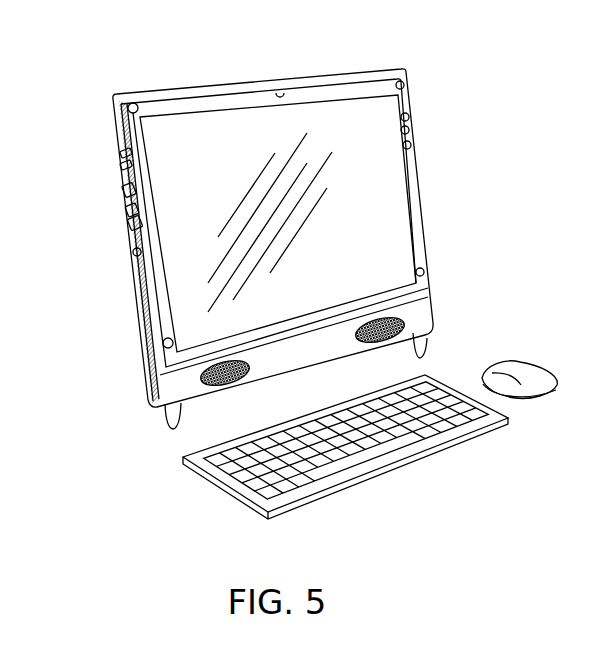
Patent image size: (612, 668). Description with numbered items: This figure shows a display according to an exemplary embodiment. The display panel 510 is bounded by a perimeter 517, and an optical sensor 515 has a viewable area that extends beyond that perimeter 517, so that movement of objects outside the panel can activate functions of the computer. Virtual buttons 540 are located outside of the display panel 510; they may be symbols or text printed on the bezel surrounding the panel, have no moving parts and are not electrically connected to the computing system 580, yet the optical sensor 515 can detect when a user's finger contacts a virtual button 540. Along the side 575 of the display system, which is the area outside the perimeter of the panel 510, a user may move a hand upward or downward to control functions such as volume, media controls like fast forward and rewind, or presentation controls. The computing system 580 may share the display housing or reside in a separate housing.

The display panel 510 is at (350, 118).
The optical sensor 515 is at (118, 103).
The perimeter 517 is at (414, 178).
The virtual buttons 540 is at (409, 117).
The side 575 is at (428, 232).
The computing system 580 is at (121, 191).